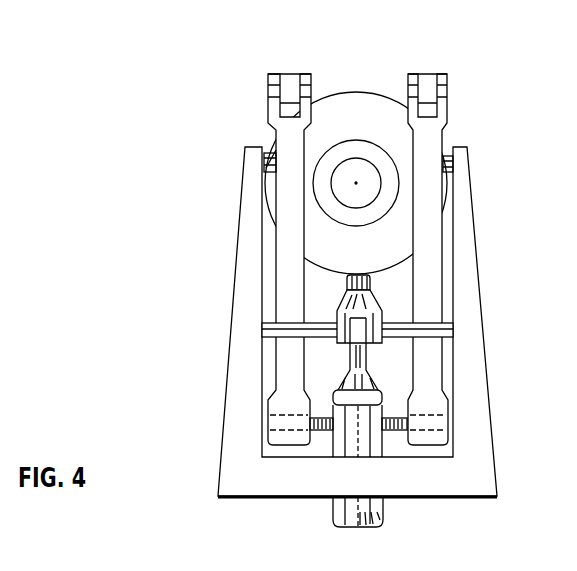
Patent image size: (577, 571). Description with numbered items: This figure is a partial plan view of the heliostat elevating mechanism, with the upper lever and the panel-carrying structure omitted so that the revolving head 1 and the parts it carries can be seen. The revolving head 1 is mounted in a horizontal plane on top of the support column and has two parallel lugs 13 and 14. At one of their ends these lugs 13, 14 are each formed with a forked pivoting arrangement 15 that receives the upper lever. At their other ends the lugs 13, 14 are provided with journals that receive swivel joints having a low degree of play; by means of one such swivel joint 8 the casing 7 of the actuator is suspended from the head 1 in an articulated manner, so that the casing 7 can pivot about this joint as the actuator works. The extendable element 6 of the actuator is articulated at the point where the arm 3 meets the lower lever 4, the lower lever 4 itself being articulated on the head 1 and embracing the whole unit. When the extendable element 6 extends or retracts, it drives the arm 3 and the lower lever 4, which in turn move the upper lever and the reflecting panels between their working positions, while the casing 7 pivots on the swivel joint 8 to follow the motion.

The revolving head 1 is at (372, 107).
The arm 3 is at (375, 290).
The lower lever 4 is at (475, 429).
The extendable element 6 is at (373, 370).
The casing 7 is at (383, 513).
The swivel joint 8 is at (310, 423).
The parallel lug 13 is at (288, 208).
The parallel lug 14 is at (430, 203).
The forked pivoting arrangement 15 is at (291, 82).